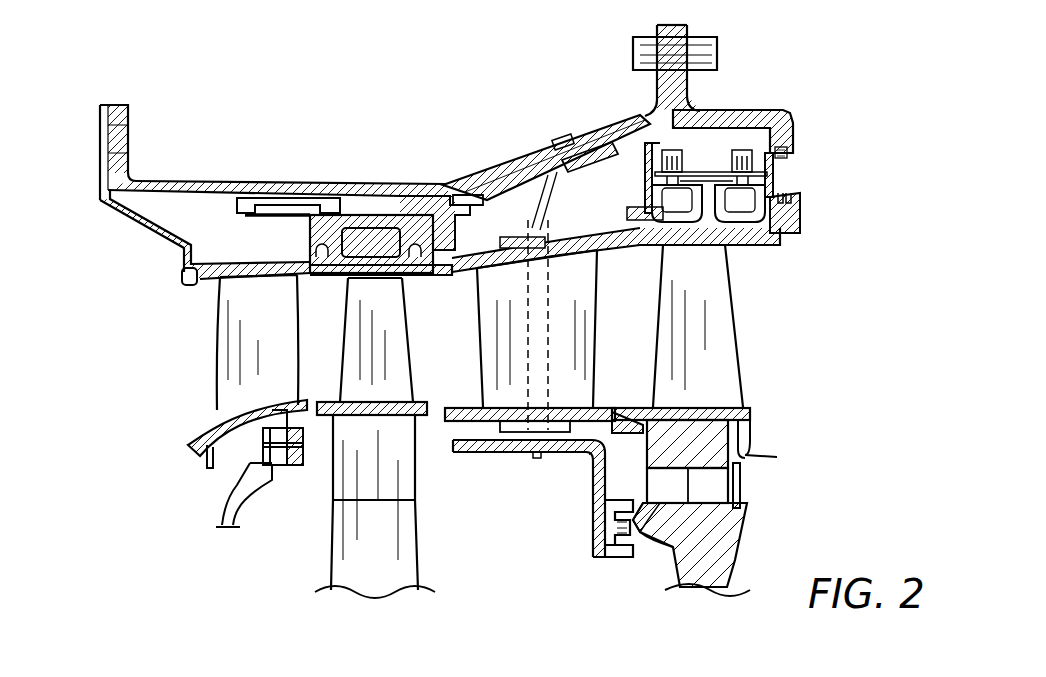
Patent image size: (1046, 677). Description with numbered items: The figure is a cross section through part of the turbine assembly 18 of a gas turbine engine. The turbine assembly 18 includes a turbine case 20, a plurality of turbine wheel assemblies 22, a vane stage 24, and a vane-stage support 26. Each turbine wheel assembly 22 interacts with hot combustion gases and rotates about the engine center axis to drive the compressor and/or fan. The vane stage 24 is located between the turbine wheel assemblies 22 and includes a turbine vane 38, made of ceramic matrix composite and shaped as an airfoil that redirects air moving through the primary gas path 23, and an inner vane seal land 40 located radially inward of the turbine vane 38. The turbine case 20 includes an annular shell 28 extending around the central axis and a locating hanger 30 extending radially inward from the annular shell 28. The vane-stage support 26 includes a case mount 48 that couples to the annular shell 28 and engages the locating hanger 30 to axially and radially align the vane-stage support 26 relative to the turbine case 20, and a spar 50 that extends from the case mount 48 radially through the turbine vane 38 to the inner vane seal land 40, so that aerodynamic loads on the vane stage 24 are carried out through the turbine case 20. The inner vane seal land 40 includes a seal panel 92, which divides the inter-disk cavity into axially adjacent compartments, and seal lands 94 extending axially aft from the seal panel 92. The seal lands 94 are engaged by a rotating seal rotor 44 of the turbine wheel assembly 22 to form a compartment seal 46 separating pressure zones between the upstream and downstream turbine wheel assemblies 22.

The turbine assembly 18 is at (147, 92).
The turbine case 20 is at (392, 118).
The turbine wheel assembly 22 is at (272, 522).
The primary gas path 23 is at (187, 362).
The vane stage 24 is at (542, 500).
The vane-stage support 26 is at (610, 188).
The annular shell 28 is at (520, 162).
The locating hanger 30 is at (458, 198).
The turbine vane 38 is at (597, 312).
The inner vane seal land 40 is at (560, 452).
The seal rotor 44 is at (652, 556).
The compartment seal 46 is at (607, 553).
The case mount 48 is at (576, 208).
The spar 50 is at (518, 320).
The seal panel 92 is at (466, 453).
The seal land 94 is at (646, 508).